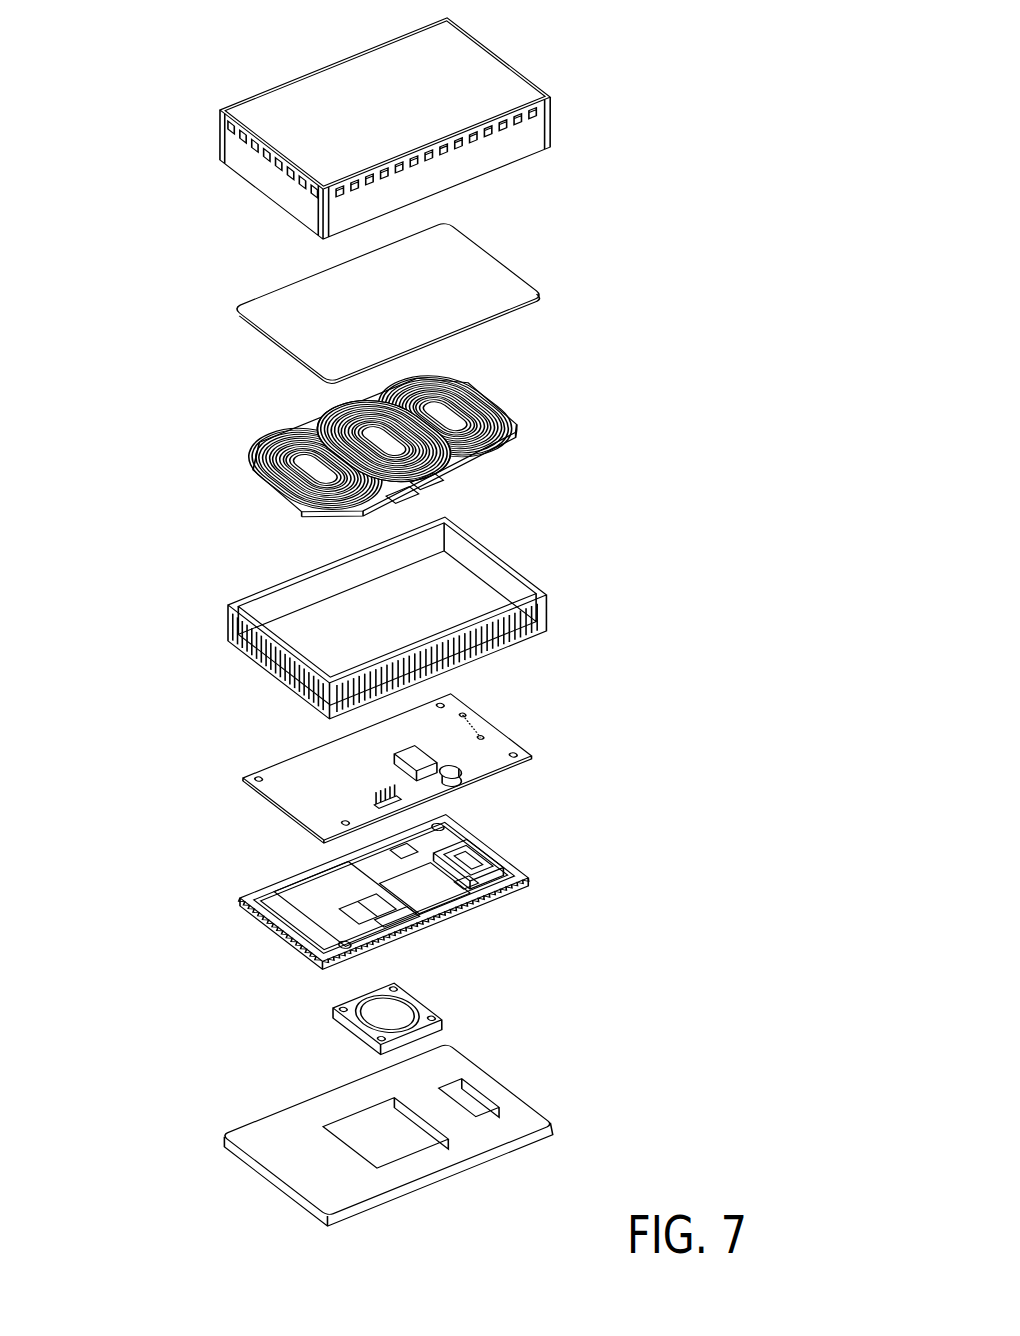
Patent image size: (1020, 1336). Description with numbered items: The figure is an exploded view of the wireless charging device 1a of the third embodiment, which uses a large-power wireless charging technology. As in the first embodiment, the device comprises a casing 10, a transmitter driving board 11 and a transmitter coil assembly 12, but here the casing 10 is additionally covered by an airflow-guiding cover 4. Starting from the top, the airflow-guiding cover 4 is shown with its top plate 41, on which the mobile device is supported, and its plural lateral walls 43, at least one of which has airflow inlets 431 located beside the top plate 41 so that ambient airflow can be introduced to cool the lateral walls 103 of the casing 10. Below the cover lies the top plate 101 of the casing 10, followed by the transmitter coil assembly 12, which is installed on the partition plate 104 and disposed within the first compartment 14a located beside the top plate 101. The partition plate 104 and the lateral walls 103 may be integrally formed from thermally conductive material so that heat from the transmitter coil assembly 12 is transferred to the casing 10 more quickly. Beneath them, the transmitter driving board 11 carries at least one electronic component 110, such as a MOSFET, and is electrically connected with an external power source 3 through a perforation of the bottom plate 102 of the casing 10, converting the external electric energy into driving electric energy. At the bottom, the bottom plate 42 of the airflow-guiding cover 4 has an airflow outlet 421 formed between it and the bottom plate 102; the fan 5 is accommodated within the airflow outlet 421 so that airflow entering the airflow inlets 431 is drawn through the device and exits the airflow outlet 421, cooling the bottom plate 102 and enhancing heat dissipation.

The wireless charging device 1a is at (750, 55).
The airflow-guiding cover 4 is at (703, 133).
The top plate 41 is at (493, 88).
The lateral walls 43 is at (530, 133).
The airflow inlet 431 is at (220, 130).
The bottom plate 42 is at (518, 1120).
The airflow outlet 421 is at (387, 1127).
The casing 10 is at (148, 478).
The top plate 101 is at (293, 323).
The transmitter coil assembly 12 is at (485, 393).
The lateral walls 103 is at (333, 697).
The partition plate 104 is at (297, 617).
The first compartment 14a is at (490, 562).
The transmitter driving board 11 is at (497, 748).
The electronic component 110 is at (418, 768).
The bottom plate 102 is at (297, 925).
The external power source 3 is at (467, 858).
The fan 5 is at (408, 1007).